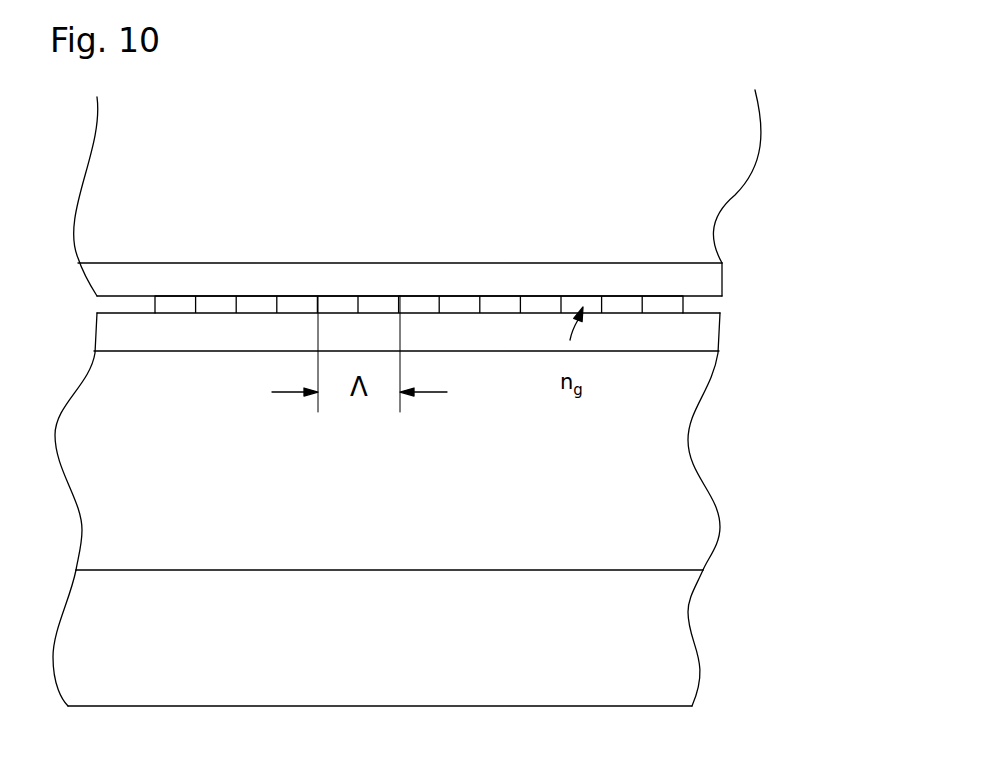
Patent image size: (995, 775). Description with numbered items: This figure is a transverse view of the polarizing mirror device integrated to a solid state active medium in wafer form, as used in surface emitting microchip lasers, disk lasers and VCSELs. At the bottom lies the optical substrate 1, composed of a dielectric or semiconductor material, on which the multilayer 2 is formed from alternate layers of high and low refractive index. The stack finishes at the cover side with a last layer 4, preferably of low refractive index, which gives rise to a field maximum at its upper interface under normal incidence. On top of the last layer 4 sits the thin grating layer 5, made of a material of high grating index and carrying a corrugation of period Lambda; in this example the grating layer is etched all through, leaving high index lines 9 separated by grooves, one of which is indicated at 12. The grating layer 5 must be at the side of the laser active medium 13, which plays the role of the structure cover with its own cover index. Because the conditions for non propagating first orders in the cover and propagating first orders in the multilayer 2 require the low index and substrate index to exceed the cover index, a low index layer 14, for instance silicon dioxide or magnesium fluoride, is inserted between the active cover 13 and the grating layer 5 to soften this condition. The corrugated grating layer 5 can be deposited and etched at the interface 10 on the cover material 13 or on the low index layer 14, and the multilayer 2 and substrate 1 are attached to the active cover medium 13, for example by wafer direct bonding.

The optical substrate 1 is at (670, 641).
The multilayer 2 is at (670, 472).
The last layer 4 is at (704, 330).
The grating layer 5 is at (88, 309).
The lines 9 is at (155, 287).
The interface 10 is at (645, 286).
The grating element 12 is at (552, 284).
The laser active medium 13 is at (697, 222).
The low index layer 14 is at (200, 271).